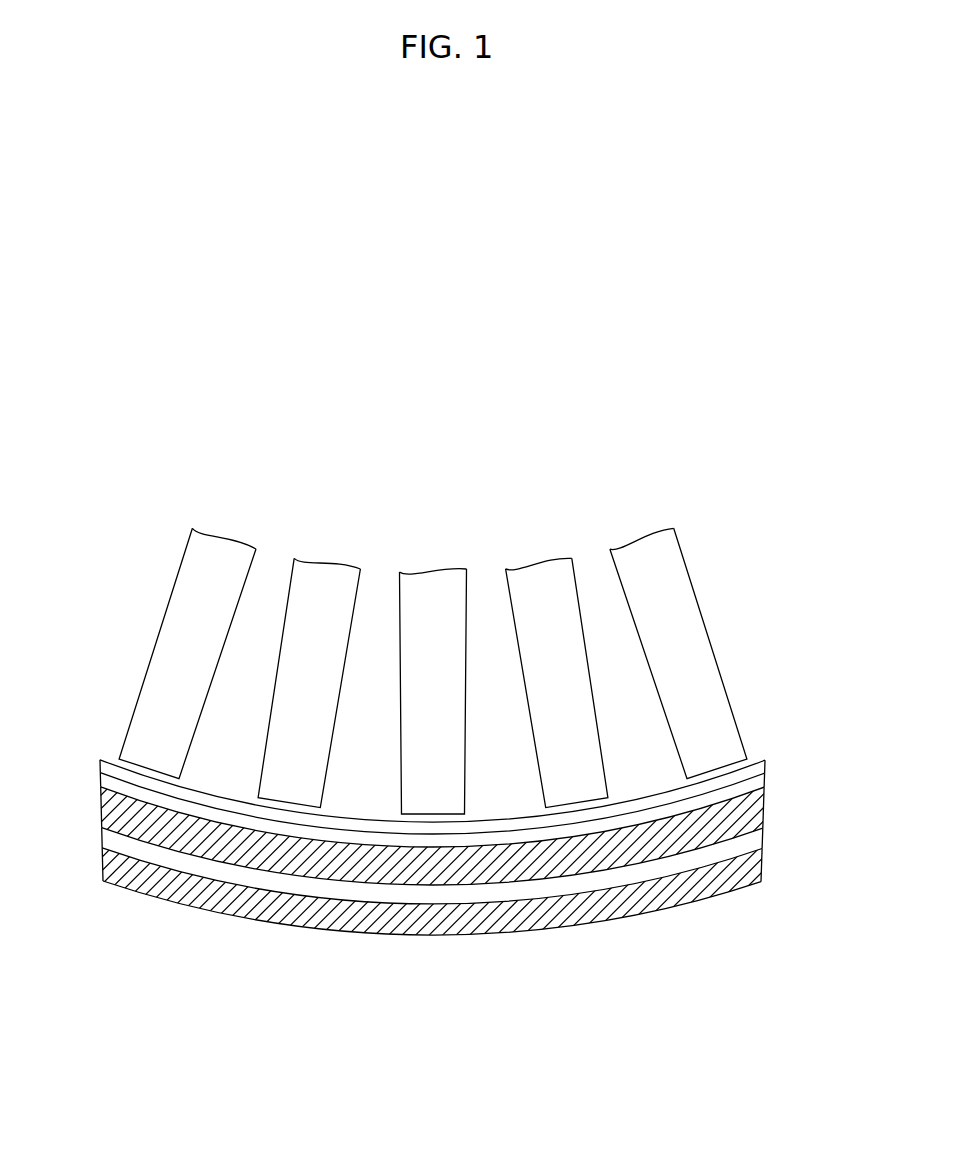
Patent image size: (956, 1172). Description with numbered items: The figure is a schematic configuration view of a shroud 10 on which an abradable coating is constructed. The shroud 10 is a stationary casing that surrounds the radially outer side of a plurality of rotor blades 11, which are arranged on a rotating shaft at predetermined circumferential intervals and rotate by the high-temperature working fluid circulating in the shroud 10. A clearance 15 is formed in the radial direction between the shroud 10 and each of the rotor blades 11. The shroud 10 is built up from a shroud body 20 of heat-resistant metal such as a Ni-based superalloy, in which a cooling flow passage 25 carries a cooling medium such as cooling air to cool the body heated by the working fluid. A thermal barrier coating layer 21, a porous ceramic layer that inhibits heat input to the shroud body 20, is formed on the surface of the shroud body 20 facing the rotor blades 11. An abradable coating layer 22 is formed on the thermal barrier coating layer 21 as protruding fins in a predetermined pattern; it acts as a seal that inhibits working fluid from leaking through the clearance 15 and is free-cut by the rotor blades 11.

The shroud 10 is at (478, 850).
The rotor blades 11 is at (577, 594).
The clearance 15 is at (472, 819).
The shroud body 20 is at (567, 934).
The thermal barrier coating layer 21 is at (98, 781).
The abradable coating layer 22 is at (98, 766).
The cooling flow passage 25 is at (767, 830).